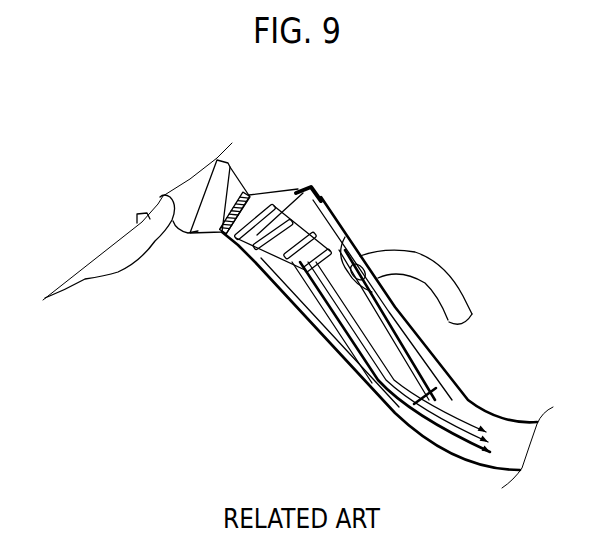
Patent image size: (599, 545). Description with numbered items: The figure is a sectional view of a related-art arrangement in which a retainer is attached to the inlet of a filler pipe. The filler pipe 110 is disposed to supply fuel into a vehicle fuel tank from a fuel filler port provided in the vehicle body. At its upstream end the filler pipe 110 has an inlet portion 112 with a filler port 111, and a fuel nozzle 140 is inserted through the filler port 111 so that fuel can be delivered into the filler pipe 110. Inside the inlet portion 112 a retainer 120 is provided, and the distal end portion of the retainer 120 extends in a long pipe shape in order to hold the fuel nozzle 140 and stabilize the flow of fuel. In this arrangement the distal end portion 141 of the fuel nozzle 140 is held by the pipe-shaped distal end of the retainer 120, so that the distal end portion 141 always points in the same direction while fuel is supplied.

The filler pipe 110 is at (316, 341).
The filler port 111 is at (300, 194).
The inlet portion 112 is at (275, 292).
The retainer 120 is at (405, 341).
The fuel nozzle 140 is at (362, 360).
The distal end portion 141 is at (414, 404).